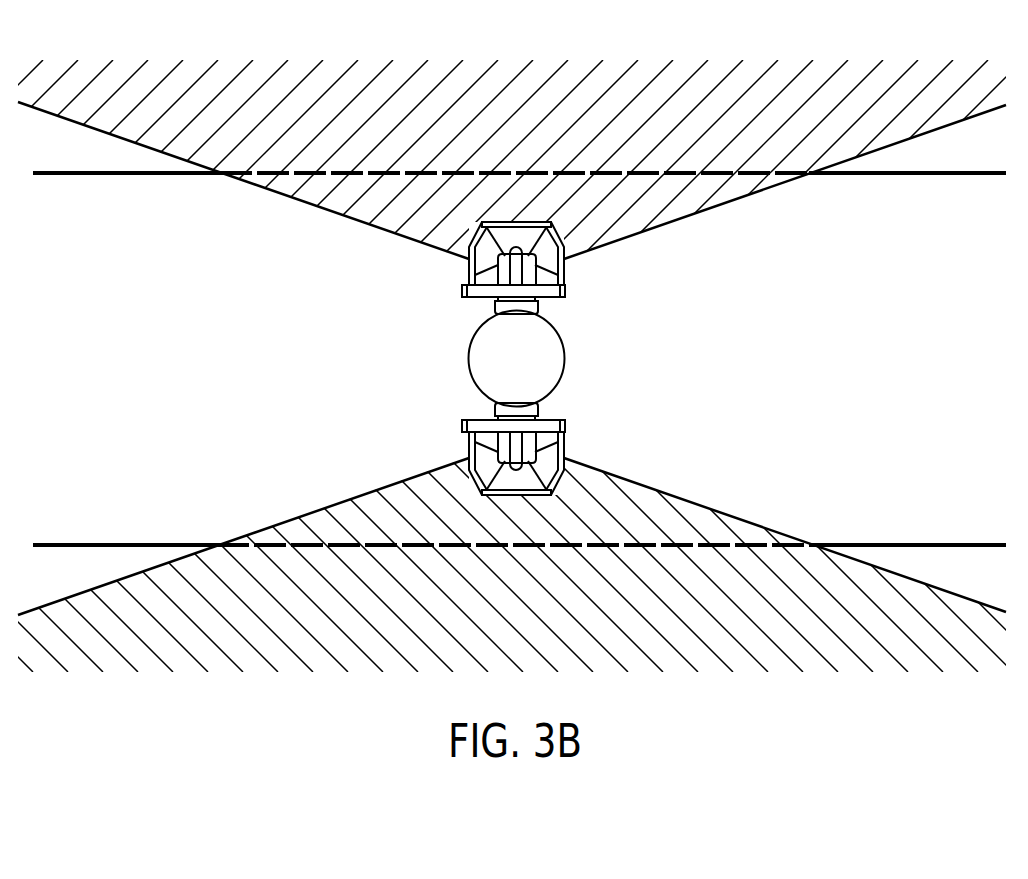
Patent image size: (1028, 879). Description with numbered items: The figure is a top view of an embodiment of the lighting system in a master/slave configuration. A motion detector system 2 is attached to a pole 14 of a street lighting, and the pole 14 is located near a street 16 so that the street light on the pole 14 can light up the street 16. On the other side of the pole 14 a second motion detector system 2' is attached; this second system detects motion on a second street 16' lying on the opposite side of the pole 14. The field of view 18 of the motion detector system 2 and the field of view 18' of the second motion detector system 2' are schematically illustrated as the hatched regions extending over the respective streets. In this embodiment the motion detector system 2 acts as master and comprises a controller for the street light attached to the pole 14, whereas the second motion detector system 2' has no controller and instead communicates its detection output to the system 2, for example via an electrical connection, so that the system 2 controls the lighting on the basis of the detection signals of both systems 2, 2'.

The motion detector system 2 is at (562, 268).
The second motion detector system 2' is at (568, 449).
The pole 14 is at (490, 377).
The street 16 is at (519, 199).
The second street 16' is at (519, 522).
The field of view 18 is at (511, 190).
The field of view 18' is at (514, 522).